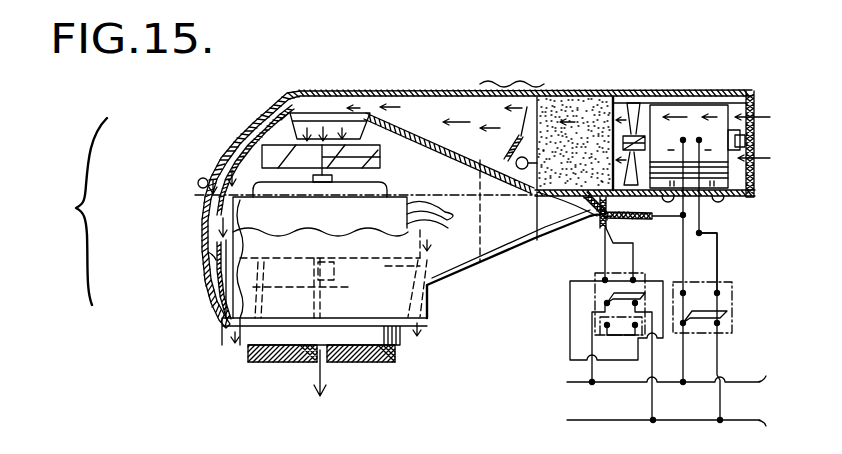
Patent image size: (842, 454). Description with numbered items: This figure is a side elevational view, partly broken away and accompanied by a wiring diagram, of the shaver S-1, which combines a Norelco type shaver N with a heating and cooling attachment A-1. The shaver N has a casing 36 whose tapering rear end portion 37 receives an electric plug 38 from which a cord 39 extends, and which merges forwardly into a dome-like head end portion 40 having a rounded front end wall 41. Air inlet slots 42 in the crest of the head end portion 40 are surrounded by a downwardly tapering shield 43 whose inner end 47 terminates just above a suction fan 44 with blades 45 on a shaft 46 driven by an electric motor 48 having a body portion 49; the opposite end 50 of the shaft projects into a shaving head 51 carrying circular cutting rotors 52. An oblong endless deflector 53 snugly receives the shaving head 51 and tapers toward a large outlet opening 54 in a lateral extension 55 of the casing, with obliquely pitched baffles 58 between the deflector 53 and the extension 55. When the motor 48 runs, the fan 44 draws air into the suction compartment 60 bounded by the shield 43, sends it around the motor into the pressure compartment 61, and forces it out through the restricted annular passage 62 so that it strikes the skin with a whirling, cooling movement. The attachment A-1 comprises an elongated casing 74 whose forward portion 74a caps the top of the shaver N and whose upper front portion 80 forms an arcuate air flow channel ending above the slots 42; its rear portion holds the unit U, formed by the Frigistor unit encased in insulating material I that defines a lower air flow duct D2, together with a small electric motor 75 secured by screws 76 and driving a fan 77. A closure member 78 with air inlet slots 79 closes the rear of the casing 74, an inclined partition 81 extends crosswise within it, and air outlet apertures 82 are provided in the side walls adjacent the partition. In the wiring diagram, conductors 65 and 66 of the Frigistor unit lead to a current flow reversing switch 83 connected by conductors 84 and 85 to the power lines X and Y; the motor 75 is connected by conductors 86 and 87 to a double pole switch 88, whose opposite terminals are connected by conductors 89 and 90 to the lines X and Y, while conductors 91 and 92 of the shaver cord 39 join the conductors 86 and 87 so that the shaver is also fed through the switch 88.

The electric shaver S-1 is at (66, 211).
The head end portion 40 is at (244, 150).
The forward portion of casing 74a is at (265, 112).
The blades 45 is at (265, 155).
The pressure compartment 61 is at (214, 173).
The body portion 49 is at (210, 206).
The front end wall 41 is at (205, 220).
The air inlet slots 42 is at (289, 103).
The suction compartment 60 is at (318, 125).
The inner end of shield 47 is at (338, 128).
The shield 43 is at (385, 128).
The upper front portion 80 is at (468, 88).
The attachment A-1 is at (512, 71).
The insulating material I is at (556, 108).
The lower air flow duct D2 is at (612, 98).
The unit U is at (630, 96).
The fan 77 is at (651, 100).
The casing 74 is at (700, 90).
The electric motor 75 is at (714, 110).
The closure member 78 is at (757, 94).
The air inlet slots 79 is at (745, 143).
The screws 76 is at (700, 205).
The inclined partition 81 is at (511, 150).
The suction fan 44 is at (394, 169).
The casing 36 is at (501, 215).
The electric motor 48 is at (410, 180).
The shaft 46 is at (335, 178).
The baffles 58 is at (317, 268).
The opposite end of shaft 50 is at (345, 300).
The shaving head 51 is at (364, 256).
The cutting rotors 52 is at (268, 363).
The restricted area 62 is at (225, 284).
The deflector 53 is at (230, 306).
The outlet opening 54 is at (232, 322).
The lateral extension 55 is at (434, 322).
The tapering rear end portion 37 is at (514, 250).
The shaver N is at (520, 275).
The electric plug 38 is at (548, 235).
The cord 39 is at (600, 230).
The conductor 91 is at (633, 206).
The conductor 65 is at (604, 252).
The conductor 66 is at (618, 246).
The current flow reversing switch 83 is at (595, 305).
The conductor 84 is at (570, 378).
The conductor 85 is at (650, 398).
The conductor 86 is at (683, 275).
The conductor 87 is at (718, 268).
The double pole switch 88 is at (733, 288).
The conductor 89 is at (671, 352).
The conductor 90 is at (722, 352).
The conductor 92 is at (720, 235).
The air outlet apertures 82 is at (500, 186).
The electric power line X is at (775, 385).
The electric power line Y is at (775, 423).